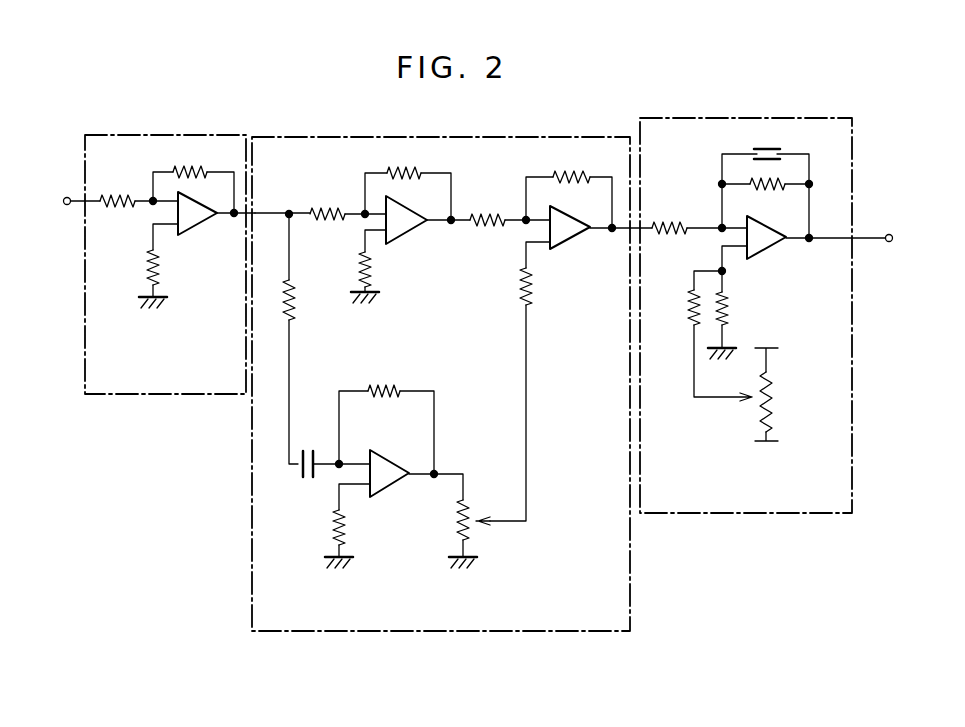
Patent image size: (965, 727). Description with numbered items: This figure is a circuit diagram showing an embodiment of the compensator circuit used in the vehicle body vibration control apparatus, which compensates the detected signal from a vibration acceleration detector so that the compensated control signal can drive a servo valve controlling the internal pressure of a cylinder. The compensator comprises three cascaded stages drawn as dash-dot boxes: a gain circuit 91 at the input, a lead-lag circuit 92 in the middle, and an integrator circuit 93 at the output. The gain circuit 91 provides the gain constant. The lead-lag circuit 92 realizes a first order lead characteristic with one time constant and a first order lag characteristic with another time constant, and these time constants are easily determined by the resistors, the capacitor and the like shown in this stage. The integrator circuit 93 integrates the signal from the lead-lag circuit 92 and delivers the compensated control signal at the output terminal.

The gain circuit 91 is at (118, 394).
The lead-lag circuit 92 is at (425, 631).
The integrator circuit 93 is at (690, 513).